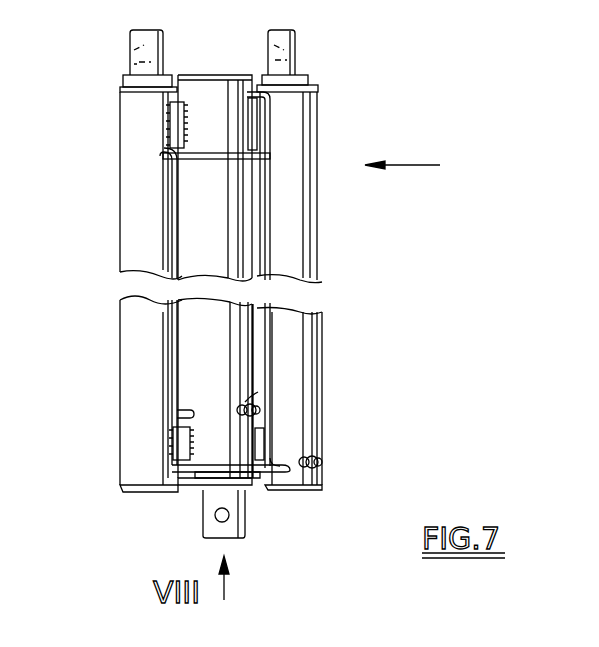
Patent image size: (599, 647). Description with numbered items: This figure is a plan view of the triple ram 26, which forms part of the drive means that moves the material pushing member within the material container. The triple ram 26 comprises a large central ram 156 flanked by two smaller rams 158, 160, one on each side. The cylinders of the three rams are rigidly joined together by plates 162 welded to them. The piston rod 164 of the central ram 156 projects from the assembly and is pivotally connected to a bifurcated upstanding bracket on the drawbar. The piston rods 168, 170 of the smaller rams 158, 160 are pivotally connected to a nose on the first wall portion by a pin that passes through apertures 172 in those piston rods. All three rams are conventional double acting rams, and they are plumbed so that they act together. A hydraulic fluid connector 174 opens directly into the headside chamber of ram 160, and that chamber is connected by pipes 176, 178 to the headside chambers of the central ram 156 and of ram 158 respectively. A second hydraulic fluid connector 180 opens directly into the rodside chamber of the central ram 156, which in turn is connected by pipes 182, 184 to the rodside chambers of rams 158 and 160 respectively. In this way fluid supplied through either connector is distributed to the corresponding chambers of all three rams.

The triple ram 26 is at (420, 170).
The central ram 156 is at (200, 348).
The ram 158 is at (128, 298).
The ram 160 is at (298, 398).
The plates 162 is at (178, 125).
The piston rod 164 is at (240, 512).
The piston rod 168 is at (123, 80).
The piston rod 170 is at (305, 80).
The apertures 172 is at (128, 48).
The hydraulic fluid connector 174 is at (320, 458).
The pipe 176 is at (280, 245).
The pipe 178 is at (200, 490).
The hydraulic fluid connector 180 is at (250, 400).
The pipe 182 is at (172, 215).
The pipe 184 is at (212, 158).